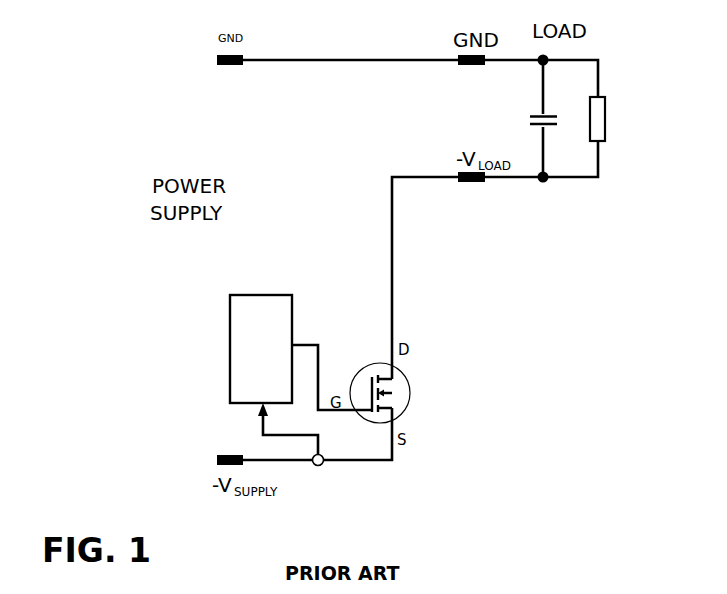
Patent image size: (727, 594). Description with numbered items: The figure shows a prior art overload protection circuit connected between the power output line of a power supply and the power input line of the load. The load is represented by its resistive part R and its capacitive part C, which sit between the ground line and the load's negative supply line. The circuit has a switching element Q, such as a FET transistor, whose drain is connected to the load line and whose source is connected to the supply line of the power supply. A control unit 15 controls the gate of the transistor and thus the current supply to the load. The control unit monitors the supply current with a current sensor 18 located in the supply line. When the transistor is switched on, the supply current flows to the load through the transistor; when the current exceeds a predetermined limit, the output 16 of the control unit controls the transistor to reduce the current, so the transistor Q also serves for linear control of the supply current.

The control unit 15 is at (230, 352).
The output of the control unit 16 is at (302, 343).
The current sensor 18 is at (322, 466).
The capacitive part of the load C is at (530, 120).
The resistive part of the load R is at (606, 122).
The switching element Q is at (409, 400).